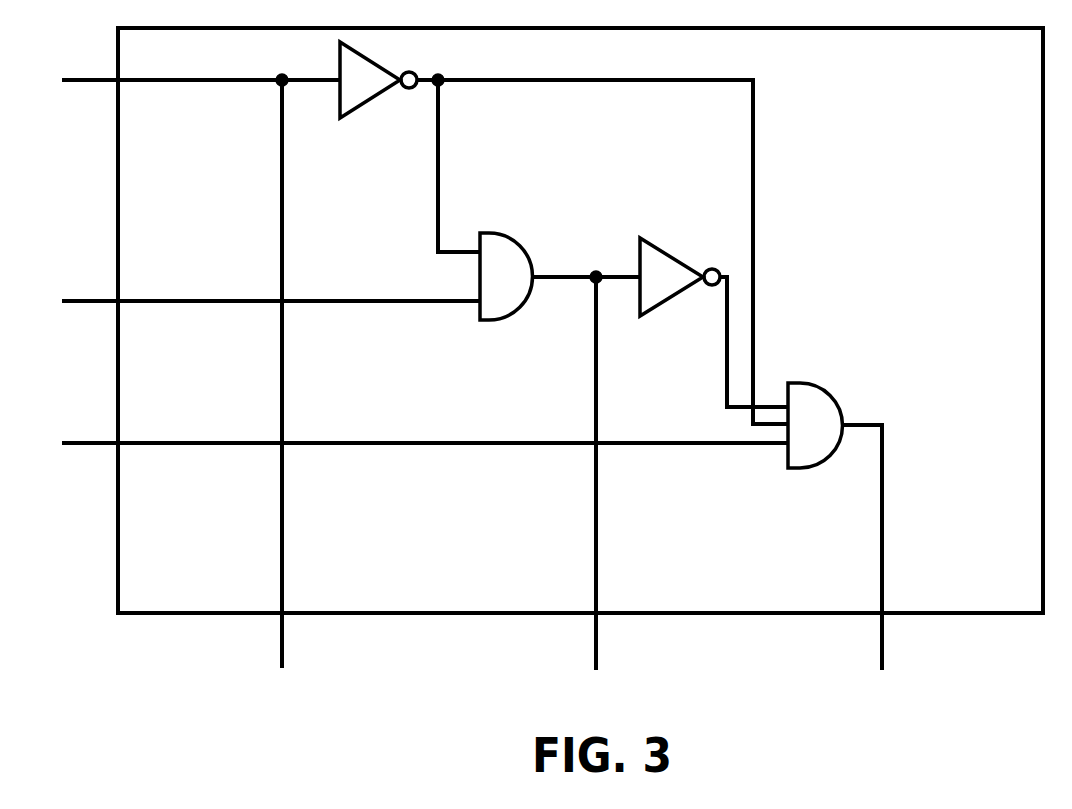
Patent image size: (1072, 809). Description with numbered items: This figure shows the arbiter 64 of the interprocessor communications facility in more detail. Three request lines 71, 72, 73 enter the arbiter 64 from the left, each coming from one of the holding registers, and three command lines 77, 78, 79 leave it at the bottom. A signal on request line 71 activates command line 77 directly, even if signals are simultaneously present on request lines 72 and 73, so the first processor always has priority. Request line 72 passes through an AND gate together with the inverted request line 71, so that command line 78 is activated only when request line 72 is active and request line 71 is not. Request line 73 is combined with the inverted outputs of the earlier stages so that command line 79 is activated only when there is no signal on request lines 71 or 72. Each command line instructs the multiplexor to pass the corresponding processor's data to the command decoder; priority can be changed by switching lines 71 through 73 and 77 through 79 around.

The arbiter 64 is at (986, 82).
The request line 71 is at (80, 80).
The request line 72 is at (80, 301).
The request line 73 is at (80, 443).
The command line 77 is at (282, 656).
The command line 78 is at (596, 654).
The command line 79 is at (882, 655).